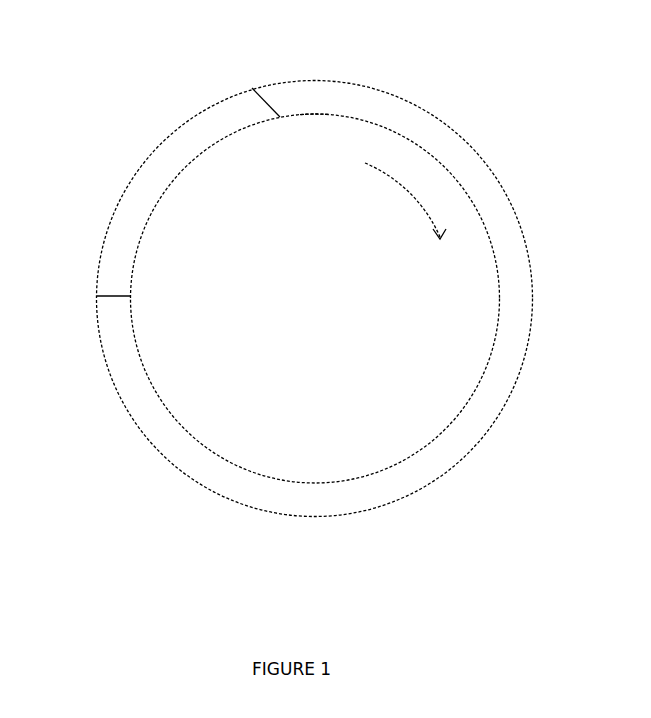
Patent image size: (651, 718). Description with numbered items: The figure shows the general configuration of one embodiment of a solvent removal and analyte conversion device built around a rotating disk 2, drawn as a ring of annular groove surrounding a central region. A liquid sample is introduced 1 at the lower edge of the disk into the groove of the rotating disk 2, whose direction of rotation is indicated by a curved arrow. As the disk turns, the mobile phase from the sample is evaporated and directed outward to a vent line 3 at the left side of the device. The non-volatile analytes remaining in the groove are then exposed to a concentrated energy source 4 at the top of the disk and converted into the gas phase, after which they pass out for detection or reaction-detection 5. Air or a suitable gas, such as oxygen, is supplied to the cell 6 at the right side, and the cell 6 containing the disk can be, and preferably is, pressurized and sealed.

The liquid sample introduction 1 is at (315, 485).
The rotating disk 2 is at (405, 201).
The vent line 3 is at (97, 296).
The concentrated energy source 4 is at (315, 113).
The detection or reaction-detection 5 is at (252, 88).
The cell 6 is at (502, 298).